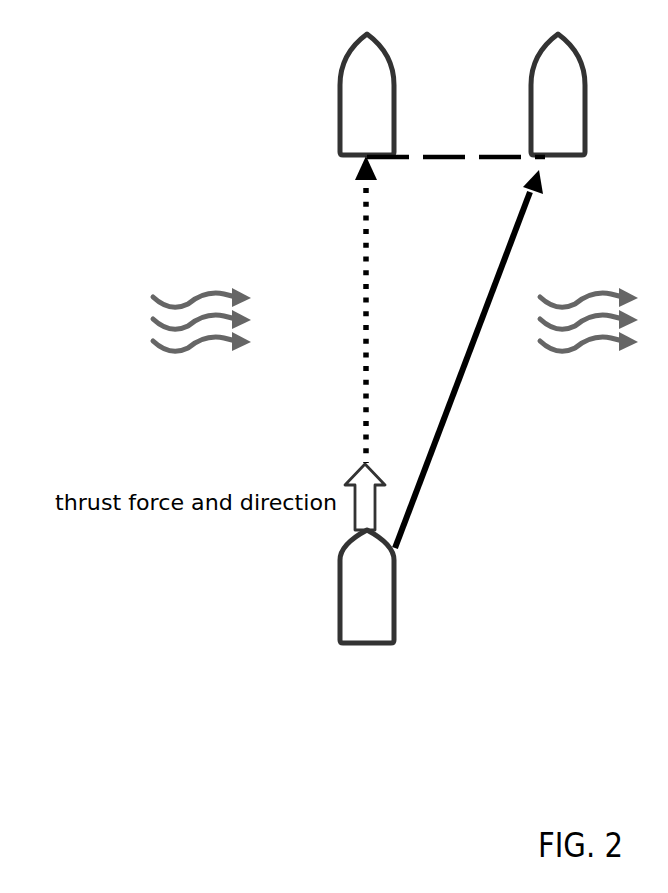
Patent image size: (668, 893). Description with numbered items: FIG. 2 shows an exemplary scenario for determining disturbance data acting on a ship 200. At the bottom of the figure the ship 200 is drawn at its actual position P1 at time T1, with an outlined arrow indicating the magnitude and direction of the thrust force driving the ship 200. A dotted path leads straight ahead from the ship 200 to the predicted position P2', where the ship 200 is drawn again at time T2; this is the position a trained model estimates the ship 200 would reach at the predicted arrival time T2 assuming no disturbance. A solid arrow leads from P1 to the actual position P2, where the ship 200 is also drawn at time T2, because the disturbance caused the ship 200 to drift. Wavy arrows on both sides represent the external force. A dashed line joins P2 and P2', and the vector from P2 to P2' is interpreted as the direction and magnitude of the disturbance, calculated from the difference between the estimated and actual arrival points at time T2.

The ship 200 is at (426, 577).
The actual position P1 is at (462, 522).
The actual position P2 is at (575, 90).
The predicted position P2' is at (387, 90).
The time T1 is at (371, 577).
The predicted arrival time T2 is at (424, 91).